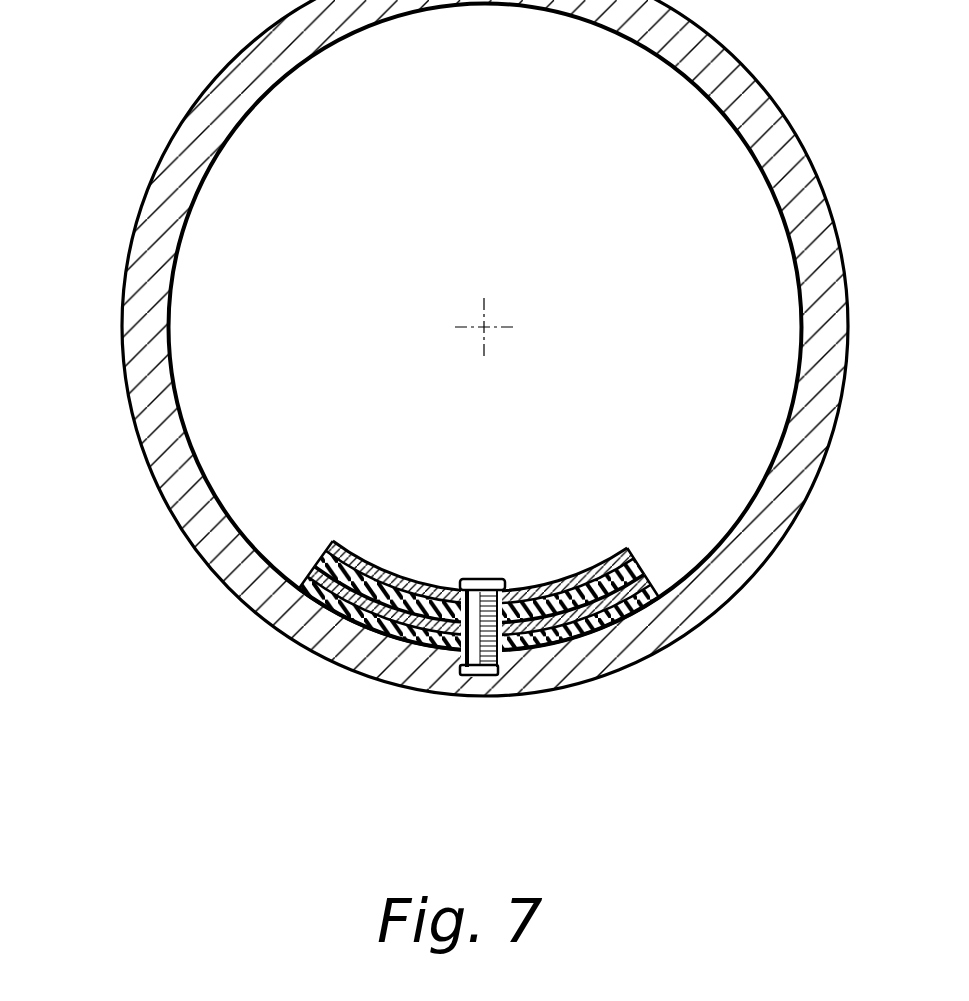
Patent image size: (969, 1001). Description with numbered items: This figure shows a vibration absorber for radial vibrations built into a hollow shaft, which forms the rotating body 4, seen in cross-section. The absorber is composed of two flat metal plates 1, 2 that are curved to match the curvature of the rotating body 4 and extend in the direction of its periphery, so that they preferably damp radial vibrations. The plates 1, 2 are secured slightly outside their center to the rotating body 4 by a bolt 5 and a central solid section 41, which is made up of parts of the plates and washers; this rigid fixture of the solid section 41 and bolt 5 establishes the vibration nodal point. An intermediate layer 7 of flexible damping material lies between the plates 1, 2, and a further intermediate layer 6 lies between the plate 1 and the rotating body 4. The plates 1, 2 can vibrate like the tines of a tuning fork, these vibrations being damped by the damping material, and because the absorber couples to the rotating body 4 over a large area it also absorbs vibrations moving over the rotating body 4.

The metal plate 1 is at (648, 578).
The metal plate 2 is at (622, 546).
The rotating body 4 is at (808, 358).
The bolt 5 is at (483, 578).
The intermediate layer 6 is at (662, 602).
The intermediate layer 7 is at (633, 565).
The central solid section 41 is at (514, 582).